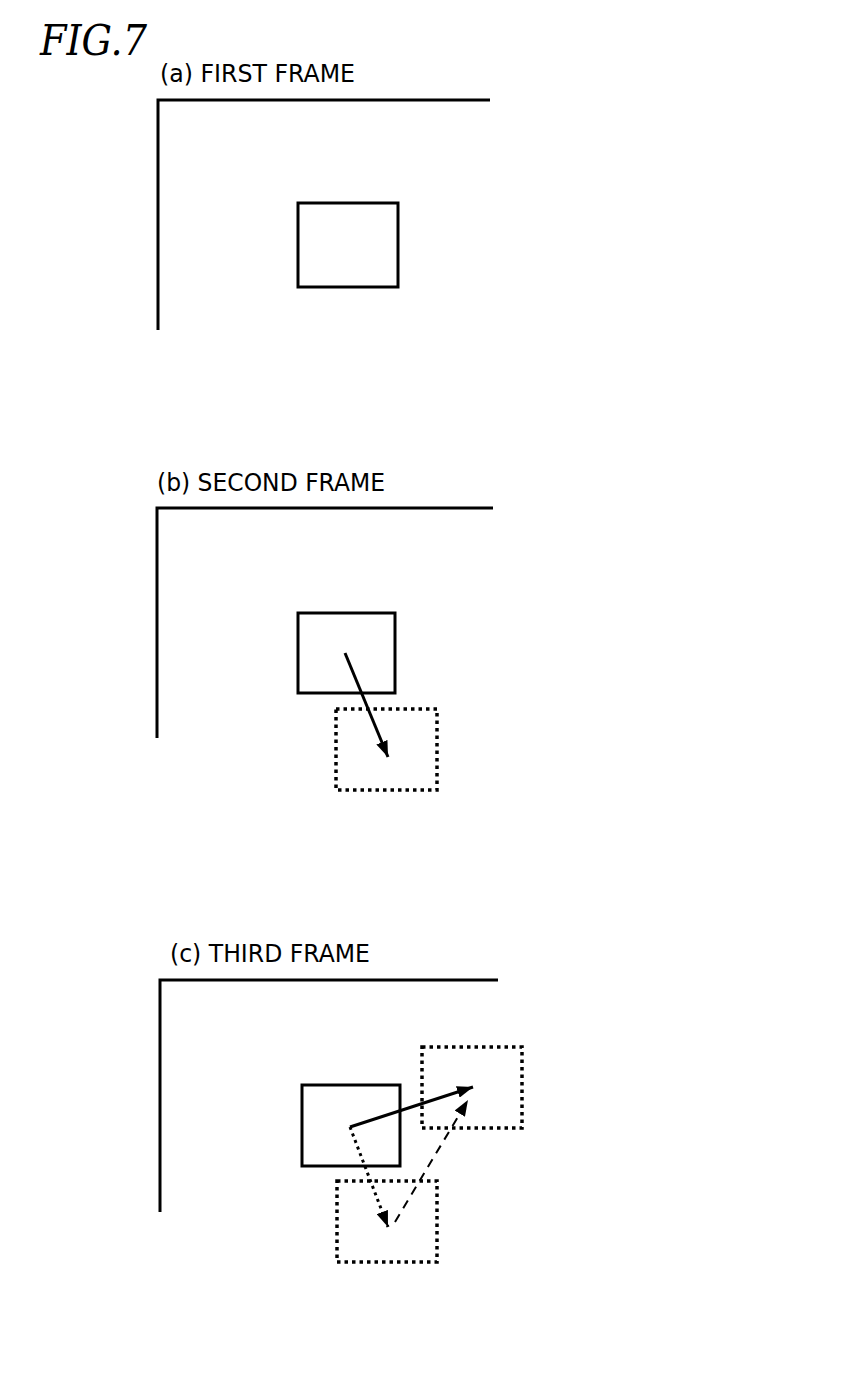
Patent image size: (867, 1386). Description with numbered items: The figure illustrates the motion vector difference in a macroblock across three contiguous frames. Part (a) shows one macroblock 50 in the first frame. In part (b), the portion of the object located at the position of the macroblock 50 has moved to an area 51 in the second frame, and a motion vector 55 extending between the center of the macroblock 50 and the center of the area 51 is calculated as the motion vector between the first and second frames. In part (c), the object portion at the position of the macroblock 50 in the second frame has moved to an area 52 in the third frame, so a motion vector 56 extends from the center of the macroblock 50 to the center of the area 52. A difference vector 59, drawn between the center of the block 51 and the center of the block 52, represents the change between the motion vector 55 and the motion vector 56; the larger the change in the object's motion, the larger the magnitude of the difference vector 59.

The macroblock 50 is at (395, 227).
The area 51 is at (437, 753).
The area 52 is at (468, 1045).
The motion vector 55 is at (370, 723).
The motion vector 56 is at (415, 1103).
The difference vector 59 is at (435, 1148).